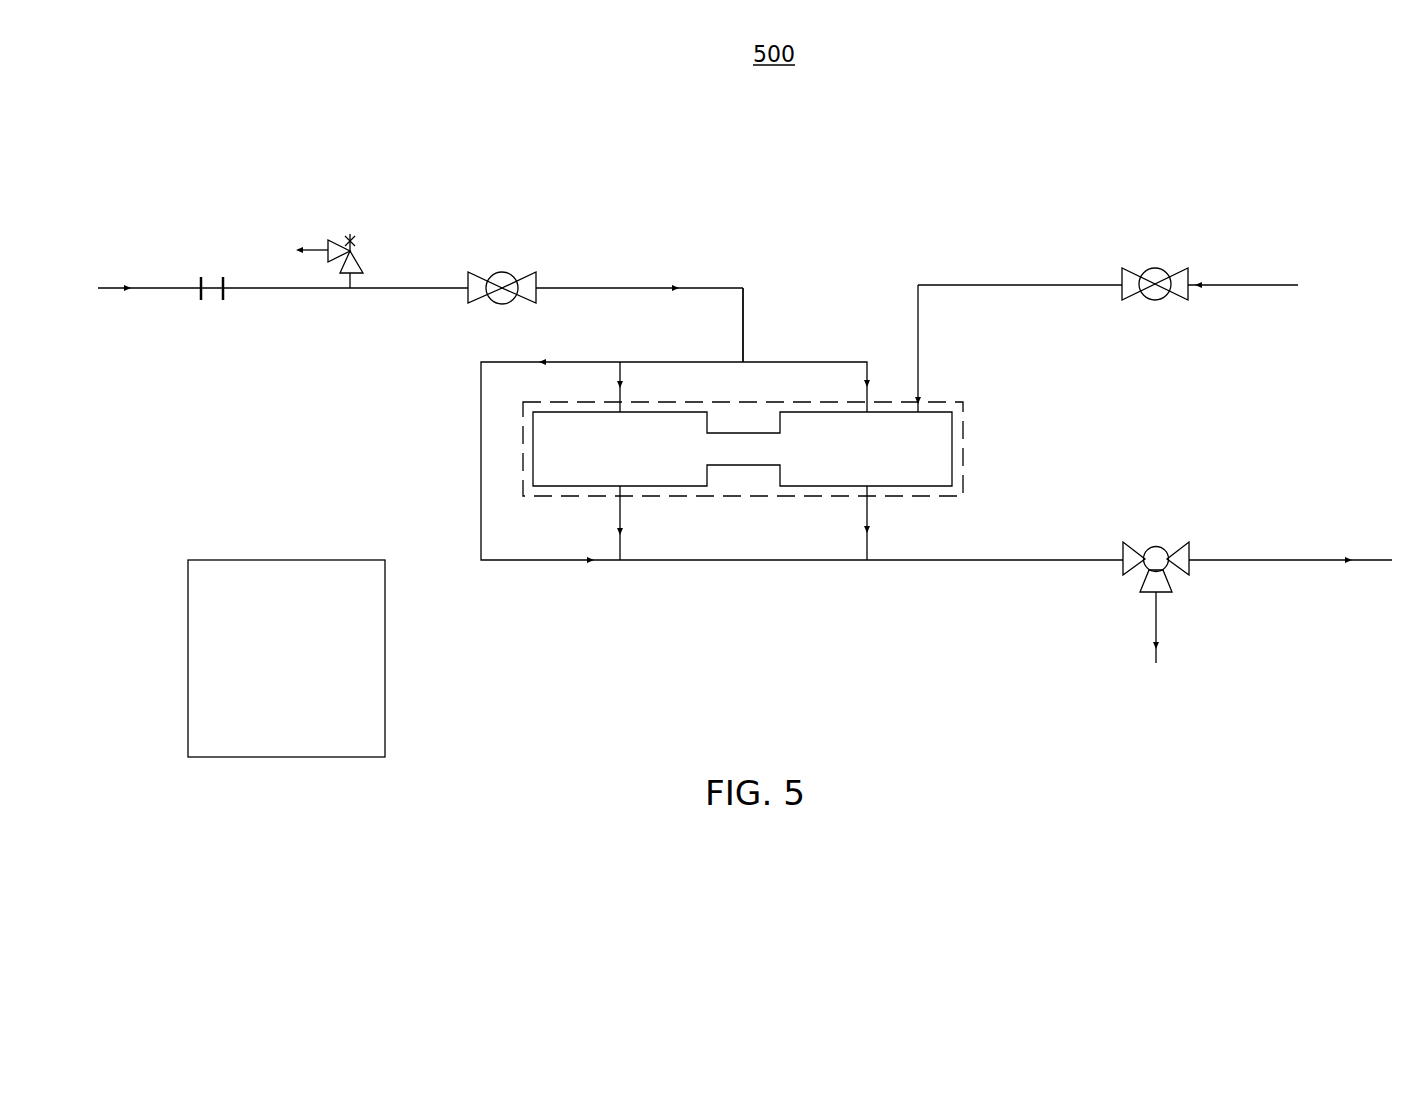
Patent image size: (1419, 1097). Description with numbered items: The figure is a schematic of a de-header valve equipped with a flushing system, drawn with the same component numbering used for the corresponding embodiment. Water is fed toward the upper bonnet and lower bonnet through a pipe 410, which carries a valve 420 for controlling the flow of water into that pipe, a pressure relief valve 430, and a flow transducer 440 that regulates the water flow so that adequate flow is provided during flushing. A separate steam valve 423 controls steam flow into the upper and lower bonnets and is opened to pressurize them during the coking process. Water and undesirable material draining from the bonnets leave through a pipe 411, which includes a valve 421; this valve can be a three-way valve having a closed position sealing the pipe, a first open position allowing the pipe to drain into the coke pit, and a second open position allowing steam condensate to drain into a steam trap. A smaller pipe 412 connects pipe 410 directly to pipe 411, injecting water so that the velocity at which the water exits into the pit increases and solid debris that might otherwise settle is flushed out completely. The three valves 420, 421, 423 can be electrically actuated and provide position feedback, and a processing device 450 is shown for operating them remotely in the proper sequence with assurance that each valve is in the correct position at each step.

The pressure relief valve 430 is at (208, 258).
The flow transducer 440 is at (363, 220).
The valve 420 is at (504, 255).
The pipe 410 is at (732, 270).
The steam valve 423 is at (1163, 250).
The pipe 412 is at (466, 459).
The pipe 411 is at (814, 578).
The valve 421 is at (1163, 530).
The processing device 450 is at (266, 701).